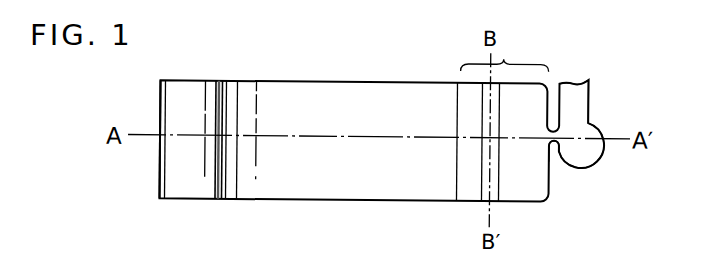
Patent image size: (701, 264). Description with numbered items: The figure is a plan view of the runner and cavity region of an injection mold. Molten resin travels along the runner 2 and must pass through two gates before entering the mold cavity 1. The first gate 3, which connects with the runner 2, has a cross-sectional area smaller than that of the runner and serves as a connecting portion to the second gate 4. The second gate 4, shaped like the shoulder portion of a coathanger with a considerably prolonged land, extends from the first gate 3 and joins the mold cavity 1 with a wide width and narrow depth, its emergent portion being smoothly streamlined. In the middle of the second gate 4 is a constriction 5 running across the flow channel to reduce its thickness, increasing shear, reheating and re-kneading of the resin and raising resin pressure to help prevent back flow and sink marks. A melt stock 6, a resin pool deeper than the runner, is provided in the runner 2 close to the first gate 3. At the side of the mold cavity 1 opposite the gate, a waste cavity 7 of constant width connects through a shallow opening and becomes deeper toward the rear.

The mold cavity 1 is at (326, 82).
The runner 2 is at (585, 108).
The first gate 3 is at (555, 148).
The second gate 4 is at (503, 58).
The constriction 5 is at (484, 201).
The melt stock 6 is at (594, 161).
The waste cavity 7 is at (169, 190).